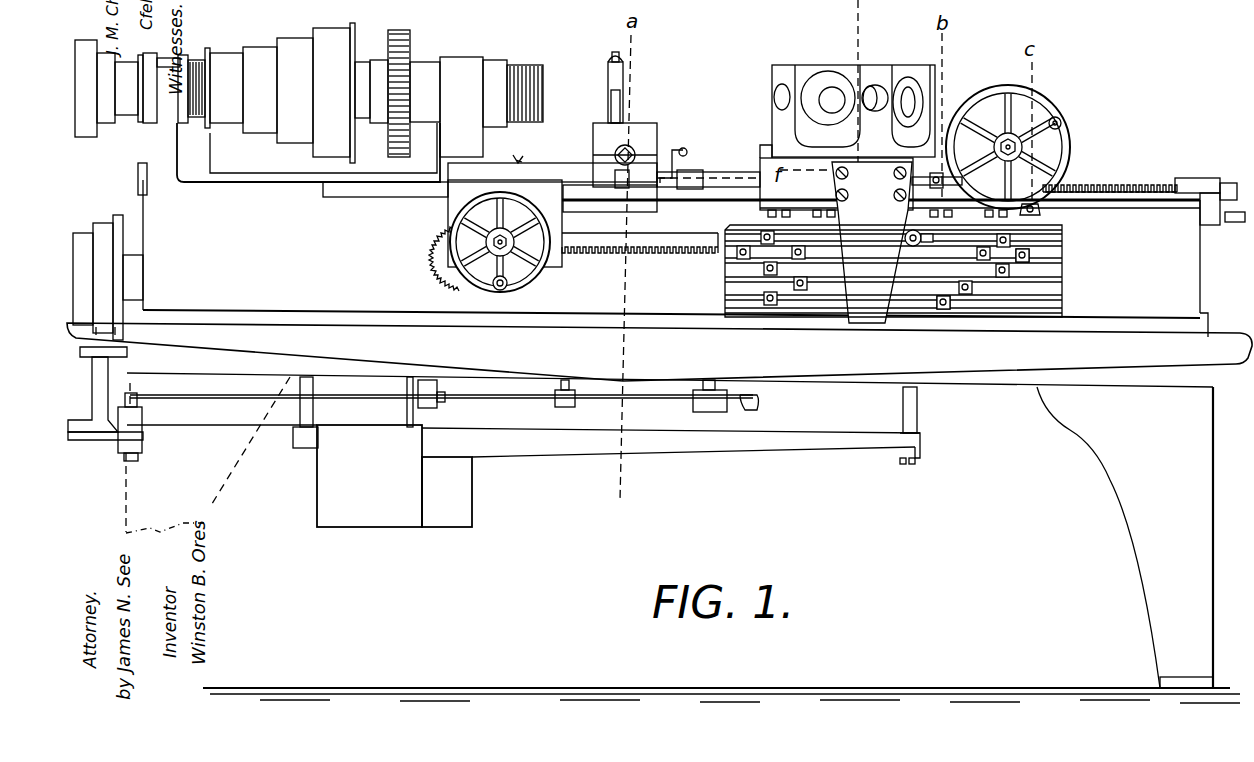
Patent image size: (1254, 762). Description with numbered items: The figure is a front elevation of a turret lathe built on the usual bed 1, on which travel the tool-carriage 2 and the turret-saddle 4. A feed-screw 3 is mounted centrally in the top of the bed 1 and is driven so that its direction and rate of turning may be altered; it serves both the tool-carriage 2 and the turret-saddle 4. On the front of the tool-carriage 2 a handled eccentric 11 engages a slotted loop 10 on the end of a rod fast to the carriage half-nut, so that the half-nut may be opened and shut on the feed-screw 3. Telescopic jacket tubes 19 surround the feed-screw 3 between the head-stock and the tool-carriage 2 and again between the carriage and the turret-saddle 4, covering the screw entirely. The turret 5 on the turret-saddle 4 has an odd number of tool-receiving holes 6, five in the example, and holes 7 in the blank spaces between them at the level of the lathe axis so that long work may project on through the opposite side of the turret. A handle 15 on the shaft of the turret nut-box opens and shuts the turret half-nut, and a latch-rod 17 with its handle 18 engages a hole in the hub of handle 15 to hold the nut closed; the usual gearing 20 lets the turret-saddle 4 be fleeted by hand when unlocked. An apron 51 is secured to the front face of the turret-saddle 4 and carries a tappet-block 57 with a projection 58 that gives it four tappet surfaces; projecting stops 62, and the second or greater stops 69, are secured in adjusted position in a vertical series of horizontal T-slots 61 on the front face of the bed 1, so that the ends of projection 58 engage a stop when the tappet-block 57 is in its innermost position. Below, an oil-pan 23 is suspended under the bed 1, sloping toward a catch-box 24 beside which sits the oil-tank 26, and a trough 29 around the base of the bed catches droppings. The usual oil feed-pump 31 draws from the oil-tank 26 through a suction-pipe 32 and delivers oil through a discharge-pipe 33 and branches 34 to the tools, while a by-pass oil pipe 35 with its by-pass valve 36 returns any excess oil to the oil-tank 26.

The bed 1 is at (1190, 285).
The tool-carriage 2 is at (572, 170).
The feed-screw 3 is at (258, 170).
The turret-saddle 4 is at (760, 165).
The turret 5 is at (785, 70).
The tool-receiving holes 6 is at (827, 82).
The holes in blank spaces 7 is at (872, 90).
The slotted loop 10 is at (625, 185).
The handled eccentric 11 is at (673, 150).
The handle 15 is at (1040, 212).
The latch-rod 17 is at (939, 190).
The handle on latch-rod 18 is at (931, 188).
The telescopic jacket tubes 19 is at (695, 172).
The gearing 20 is at (1063, 132).
The oil-pan 23 is at (705, 445).
The catch-box 24 is at (465, 490).
The oil-tank 26 is at (330, 503).
The trough 29 is at (950, 353).
The oil feed-pump 31 is at (142, 427).
The suction-pipe 32 is at (245, 463).
The oil discharge-pipe 33 is at (518, 402).
The branches 34 is at (520, 156).
The by-pass oil pipe 35 is at (405, 413).
The by-pass valve 36 is at (432, 405).
The apron 51 is at (870, 320).
The tappet-block 57 is at (883, 269).
The projection 58 is at (905, 240).
The T-slots 61 is at (1048, 305).
The projecting stops 62 is at (950, 310).
The second or greater projecting stops 69 is at (1060, 258).